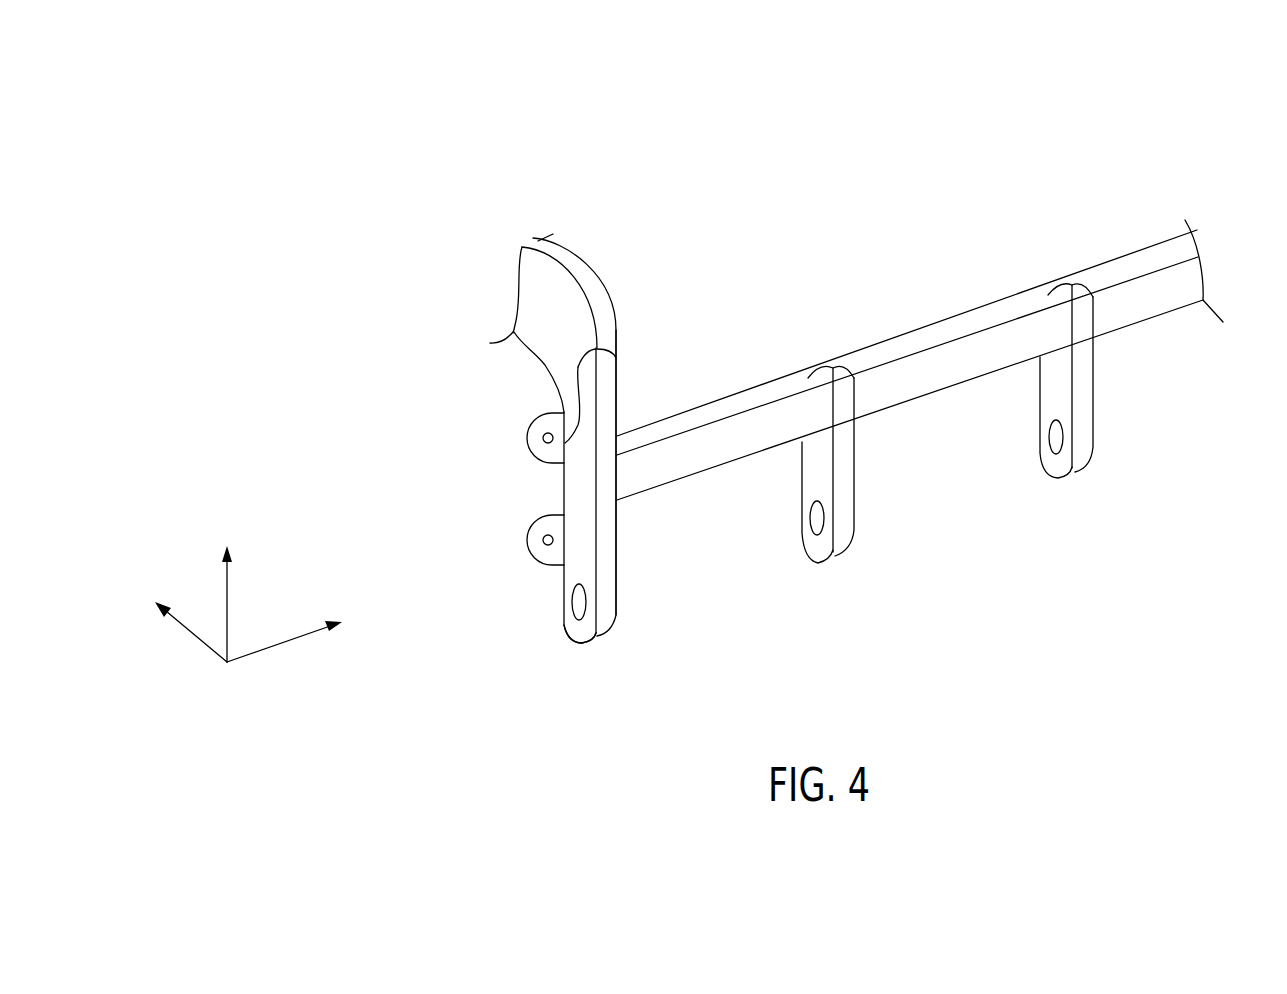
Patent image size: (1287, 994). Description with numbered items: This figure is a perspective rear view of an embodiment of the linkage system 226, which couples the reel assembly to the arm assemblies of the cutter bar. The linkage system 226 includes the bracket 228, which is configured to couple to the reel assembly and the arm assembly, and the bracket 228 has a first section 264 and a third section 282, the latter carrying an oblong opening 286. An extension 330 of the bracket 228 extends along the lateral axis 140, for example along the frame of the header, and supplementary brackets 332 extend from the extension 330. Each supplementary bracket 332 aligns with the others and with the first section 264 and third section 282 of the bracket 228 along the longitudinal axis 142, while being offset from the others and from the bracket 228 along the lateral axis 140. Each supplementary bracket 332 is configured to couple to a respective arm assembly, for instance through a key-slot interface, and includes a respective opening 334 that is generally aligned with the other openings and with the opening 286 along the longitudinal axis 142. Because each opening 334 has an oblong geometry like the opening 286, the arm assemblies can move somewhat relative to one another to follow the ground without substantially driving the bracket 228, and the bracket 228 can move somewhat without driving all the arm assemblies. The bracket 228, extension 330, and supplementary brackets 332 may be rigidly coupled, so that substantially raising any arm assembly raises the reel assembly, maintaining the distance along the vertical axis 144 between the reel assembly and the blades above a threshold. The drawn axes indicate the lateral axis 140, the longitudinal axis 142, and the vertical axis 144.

The linkage system 226 is at (1152, 103).
The bracket 228 is at (542, 288).
The third section 282 is at (606, 527).
The opening 286 is at (575, 605).
The first section 264 is at (603, 613).
The extension 330 is at (750, 390).
The supplementary bracket 332 is at (843, 463).
The opening 334 is at (815, 522).
The lateral axis 140 is at (282, 645).
The longitudinal axis 142 is at (193, 635).
The vertical axis 144 is at (230, 590).